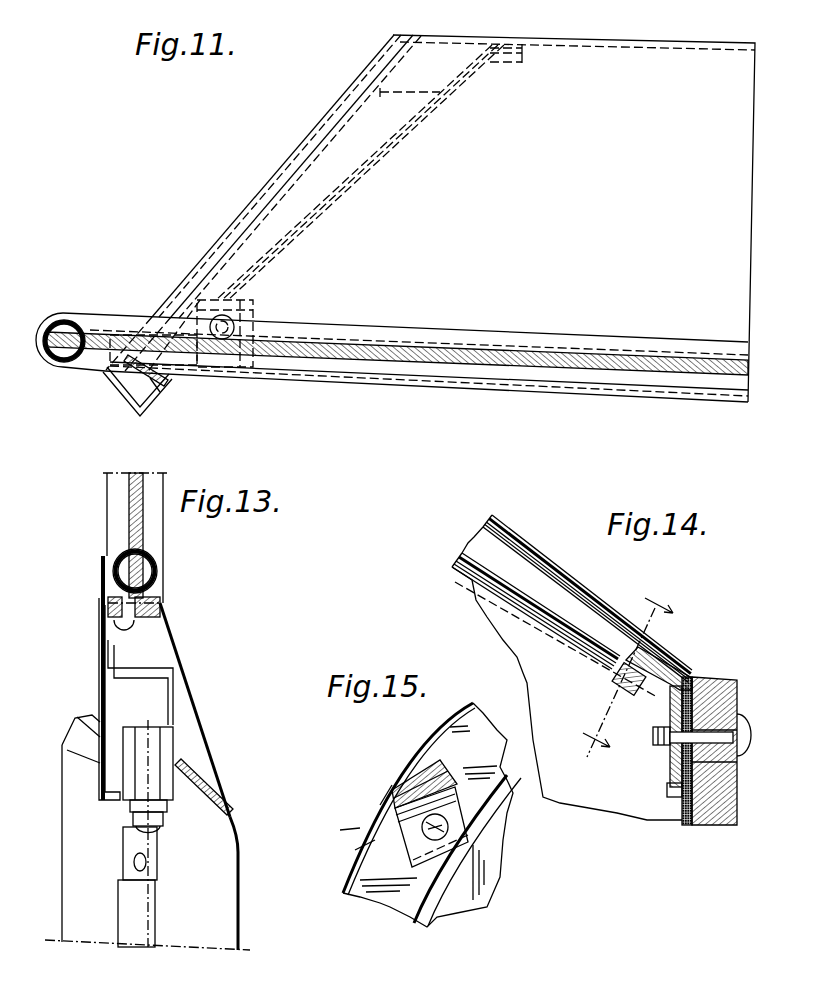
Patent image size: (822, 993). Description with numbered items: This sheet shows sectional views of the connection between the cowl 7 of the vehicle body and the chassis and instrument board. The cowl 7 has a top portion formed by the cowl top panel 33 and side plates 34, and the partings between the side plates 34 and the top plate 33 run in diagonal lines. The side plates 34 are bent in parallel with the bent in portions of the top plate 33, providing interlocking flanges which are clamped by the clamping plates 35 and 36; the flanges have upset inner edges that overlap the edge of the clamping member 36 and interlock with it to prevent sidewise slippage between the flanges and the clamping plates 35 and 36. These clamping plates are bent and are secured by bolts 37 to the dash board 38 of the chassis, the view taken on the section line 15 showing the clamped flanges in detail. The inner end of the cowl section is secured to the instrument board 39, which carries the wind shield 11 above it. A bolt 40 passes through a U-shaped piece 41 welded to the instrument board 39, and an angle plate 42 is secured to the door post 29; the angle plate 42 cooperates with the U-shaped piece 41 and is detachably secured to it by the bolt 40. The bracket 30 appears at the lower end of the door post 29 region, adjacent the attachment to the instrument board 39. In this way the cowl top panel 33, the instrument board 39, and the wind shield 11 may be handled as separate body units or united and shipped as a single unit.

In FIG. 11, the cowl 7 is at (574, 218).
In FIG. 13, the cowl 7 is at (228, 812).
In FIG. 15, the cowl 7 is at (393, 790).
In FIG. 11, the wind shield 11 is at (367, 352).
In FIG. 13, the wind shield 11 is at (146, 568).
In FIG. 14, the section line 15— 15 is at (633, 669).
In FIG. 11, the door post 29 is at (158, 388).
In FIG. 13, the door post 29 is at (134, 894).
In FIG. 11, the bracket 30 is at (136, 390).
In FIG. 13, the bracket 30 is at (61, 828).
In FIG. 11, the cowl top panel 33 is at (360, 172).
In FIG. 13, the cowl top panel 33 is at (172, 626).
In FIG. 14, the cowl top panel 33 is at (568, 618).
In FIG. 15, the cowl top panel 33 is at (440, 725).
In FIG. 11, the side plate 34 is at (323, 130).
In FIG. 13, the side plate 34 is at (238, 898).
In FIG. 14, the side plate 34 is at (552, 636).
In FIG. 15, the side plate 34 is at (365, 840).
In FIG. 11, the clamping plate 35 is at (418, 95).
In FIG. 14, the clamping plate 35 is at (676, 661).
In FIG. 15, the clamping plate 35 is at (448, 758).
In FIG. 11, the clamping member 36 is at (522, 63).
In FIG. 14, the clamping member 36 is at (670, 698).
In FIG. 15, the clamping member 36 is at (455, 790).
In FIG. 14, the bolt 37 is at (653, 734).
In FIG. 15, the bolt 37 is at (467, 833).
In FIG. 14, the dash board 38 is at (718, 675).
In FIG. 15, the dash board 38 is at (494, 868).
In FIG. 11, the instrument board 39 is at (472, 395).
In FIG. 13, the instrument board 39 is at (100, 692).
In FIG. 11, the bolt 40 is at (246, 296).
In FIG. 13, the bolt 40 is at (157, 712).
In FIG. 11, the U-shaped piece 41 is at (253, 304).
In FIG. 13, the U-shaped piece 41 is at (158, 670).
In FIG. 11, the angle plate 42 is at (200, 296).
In FIG. 13, the angle plate 42 is at (150, 843).